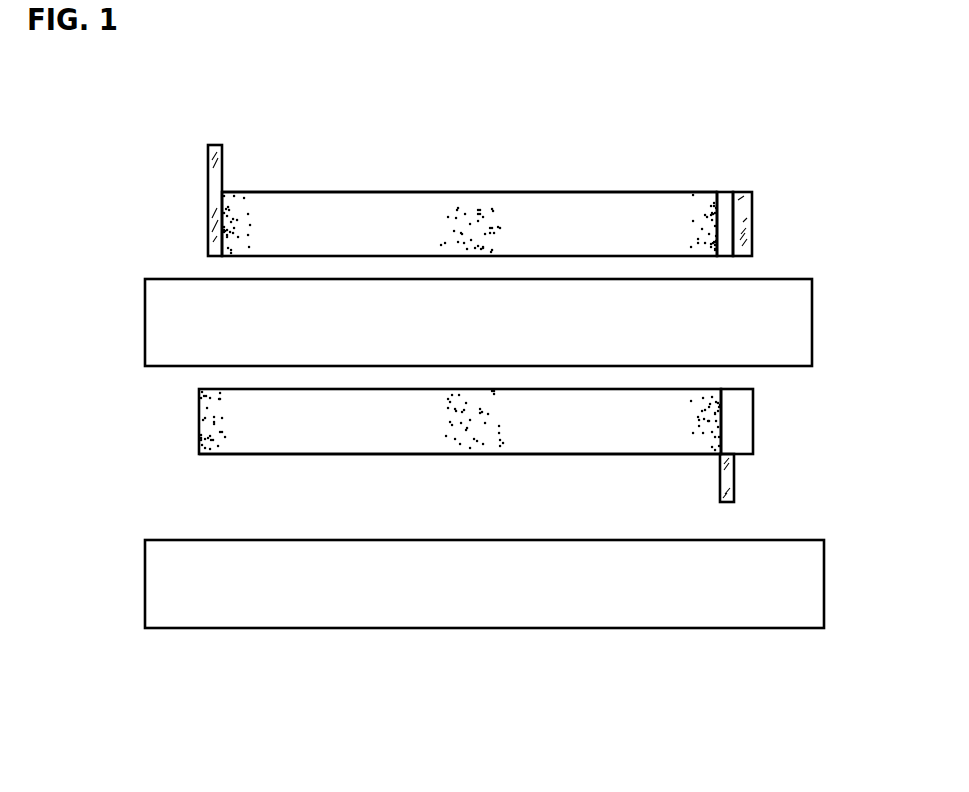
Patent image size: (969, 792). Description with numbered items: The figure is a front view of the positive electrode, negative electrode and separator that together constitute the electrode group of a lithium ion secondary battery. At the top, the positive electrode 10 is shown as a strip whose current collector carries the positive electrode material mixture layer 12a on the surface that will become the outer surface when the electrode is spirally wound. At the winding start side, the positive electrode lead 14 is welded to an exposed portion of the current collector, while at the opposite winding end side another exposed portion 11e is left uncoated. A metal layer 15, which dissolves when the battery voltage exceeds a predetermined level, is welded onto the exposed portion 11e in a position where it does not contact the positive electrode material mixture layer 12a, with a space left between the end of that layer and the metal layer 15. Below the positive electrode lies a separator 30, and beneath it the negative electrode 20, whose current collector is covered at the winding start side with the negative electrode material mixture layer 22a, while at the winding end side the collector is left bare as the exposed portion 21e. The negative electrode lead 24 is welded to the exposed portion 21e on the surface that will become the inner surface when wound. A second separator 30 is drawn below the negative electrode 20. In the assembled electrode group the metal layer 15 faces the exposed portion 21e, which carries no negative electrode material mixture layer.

The positive electrode 10 is at (568, 189).
The positive electrode material mixture layer 12a is at (396, 207).
The positive electrode lead 14 is at (218, 174).
The exposed portion of the positive electrode current collector 11e is at (727, 200).
The metal layer 15 is at (745, 223).
The separator 30 is at (790, 313).
The negative electrode 20 is at (590, 457).
The negative electrode material mixture layer 22a is at (351, 440).
The exposed portion of the negative electrode current collector 21e is at (743, 430).
The negative electrode lead 24 is at (722, 490).